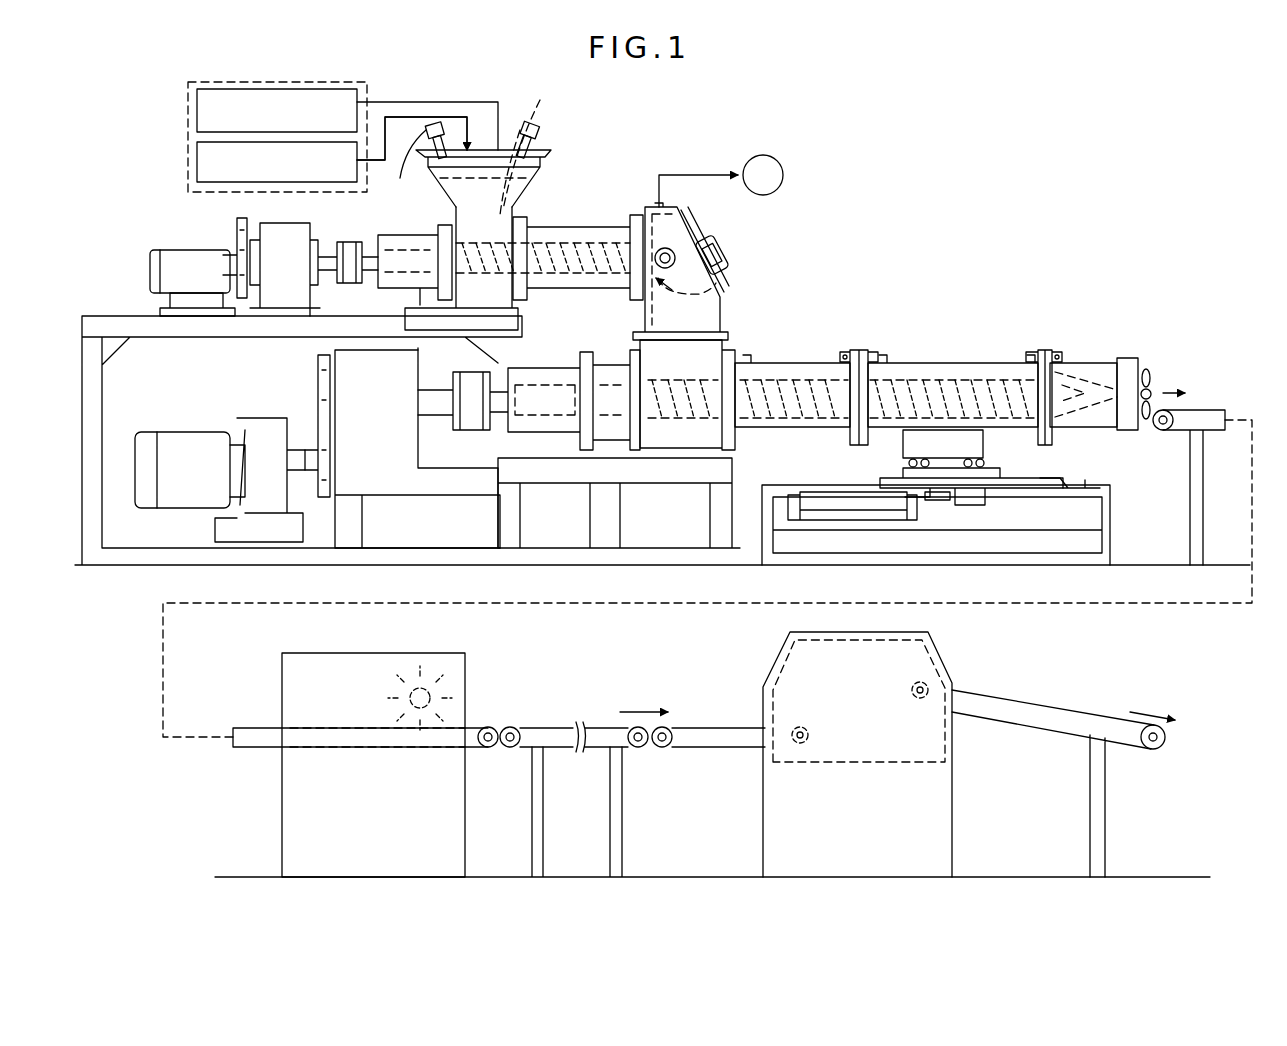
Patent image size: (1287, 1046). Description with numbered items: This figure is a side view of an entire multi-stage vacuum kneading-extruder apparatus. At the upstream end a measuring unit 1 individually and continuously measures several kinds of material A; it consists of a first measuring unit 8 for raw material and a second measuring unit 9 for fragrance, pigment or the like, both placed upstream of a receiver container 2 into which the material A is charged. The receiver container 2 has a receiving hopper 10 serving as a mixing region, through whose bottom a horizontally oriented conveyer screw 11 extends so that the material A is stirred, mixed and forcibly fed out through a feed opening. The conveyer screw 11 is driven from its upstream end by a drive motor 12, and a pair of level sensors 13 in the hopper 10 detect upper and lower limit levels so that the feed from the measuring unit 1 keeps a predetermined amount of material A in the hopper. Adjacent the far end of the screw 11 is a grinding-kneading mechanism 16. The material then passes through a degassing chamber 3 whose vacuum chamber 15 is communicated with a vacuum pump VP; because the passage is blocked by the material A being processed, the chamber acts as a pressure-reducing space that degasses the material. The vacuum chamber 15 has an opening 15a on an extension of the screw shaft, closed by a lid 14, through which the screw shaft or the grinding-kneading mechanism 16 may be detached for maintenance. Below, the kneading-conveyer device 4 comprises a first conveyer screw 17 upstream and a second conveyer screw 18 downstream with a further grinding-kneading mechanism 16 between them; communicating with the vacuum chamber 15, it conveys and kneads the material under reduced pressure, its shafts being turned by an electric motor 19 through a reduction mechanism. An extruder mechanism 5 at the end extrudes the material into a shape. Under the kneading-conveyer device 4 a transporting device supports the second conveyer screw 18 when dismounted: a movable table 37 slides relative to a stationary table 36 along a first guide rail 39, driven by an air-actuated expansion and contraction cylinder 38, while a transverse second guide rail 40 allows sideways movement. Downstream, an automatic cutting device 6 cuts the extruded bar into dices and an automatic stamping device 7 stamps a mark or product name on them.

The measuring unit 1 is at (183, 108).
The receiver container 2 is at (547, 168).
The degassing chamber 3 is at (686, 208).
The kneading-conveyer device 4 is at (905, 332).
The extruder mechanism 5 is at (1084, 362).
The automatic cutting device 6 is at (463, 655).
The automatic stamping device 7 is at (945, 663).
The first measuring unit 8 is at (197, 120).
The second measuring unit 9 is at (197, 165).
The receiving hopper 10 is at (515, 195).
The conveyer screw 11 is at (590, 255).
The drive motor 12 is at (165, 252).
The level sensors 13 is at (428, 140).
The lid 14 is at (720, 236).
The vacuum chamber 15 is at (700, 320).
The opening 15a is at (724, 270).
The grinding-kneading mechanism 16 is at (722, 297).
The first conveyer screw 17 is at (797, 357).
The second conveyer screw 18 is at (935, 375).
The electric motor 19 is at (185, 440).
The stationary table 36 is at (780, 492).
The movable table 37 is at (905, 456).
The expansion and contraction cylinder 38 is at (845, 505).
The first guide rail 39 is at (1075, 482).
The second guide rail 40 is at (915, 445).
The material A is at (531, 143).
The vacuum pump VP is at (763, 175).